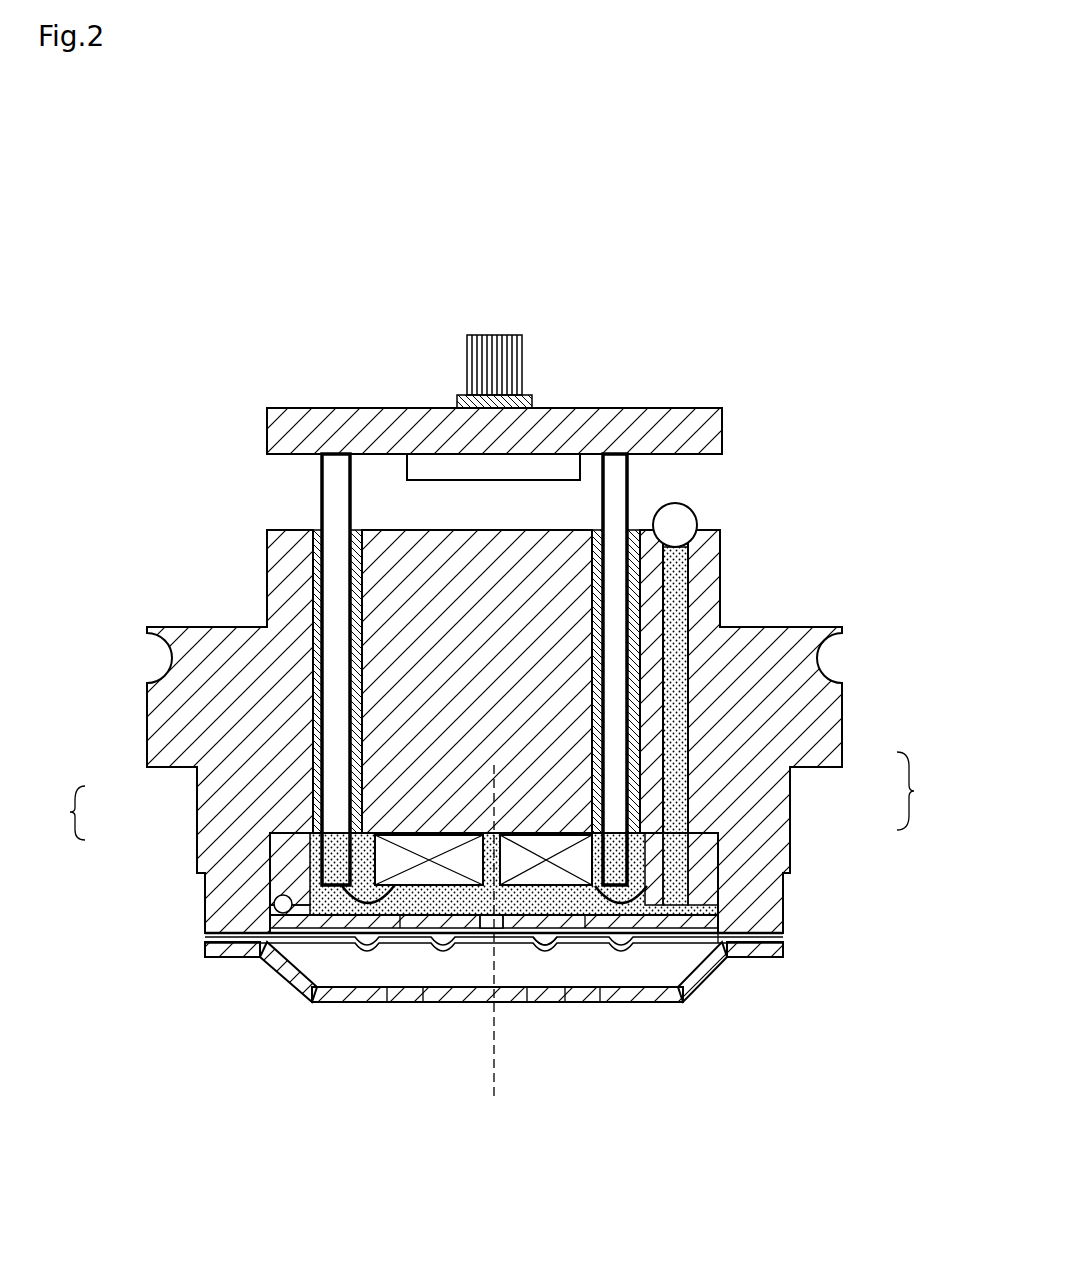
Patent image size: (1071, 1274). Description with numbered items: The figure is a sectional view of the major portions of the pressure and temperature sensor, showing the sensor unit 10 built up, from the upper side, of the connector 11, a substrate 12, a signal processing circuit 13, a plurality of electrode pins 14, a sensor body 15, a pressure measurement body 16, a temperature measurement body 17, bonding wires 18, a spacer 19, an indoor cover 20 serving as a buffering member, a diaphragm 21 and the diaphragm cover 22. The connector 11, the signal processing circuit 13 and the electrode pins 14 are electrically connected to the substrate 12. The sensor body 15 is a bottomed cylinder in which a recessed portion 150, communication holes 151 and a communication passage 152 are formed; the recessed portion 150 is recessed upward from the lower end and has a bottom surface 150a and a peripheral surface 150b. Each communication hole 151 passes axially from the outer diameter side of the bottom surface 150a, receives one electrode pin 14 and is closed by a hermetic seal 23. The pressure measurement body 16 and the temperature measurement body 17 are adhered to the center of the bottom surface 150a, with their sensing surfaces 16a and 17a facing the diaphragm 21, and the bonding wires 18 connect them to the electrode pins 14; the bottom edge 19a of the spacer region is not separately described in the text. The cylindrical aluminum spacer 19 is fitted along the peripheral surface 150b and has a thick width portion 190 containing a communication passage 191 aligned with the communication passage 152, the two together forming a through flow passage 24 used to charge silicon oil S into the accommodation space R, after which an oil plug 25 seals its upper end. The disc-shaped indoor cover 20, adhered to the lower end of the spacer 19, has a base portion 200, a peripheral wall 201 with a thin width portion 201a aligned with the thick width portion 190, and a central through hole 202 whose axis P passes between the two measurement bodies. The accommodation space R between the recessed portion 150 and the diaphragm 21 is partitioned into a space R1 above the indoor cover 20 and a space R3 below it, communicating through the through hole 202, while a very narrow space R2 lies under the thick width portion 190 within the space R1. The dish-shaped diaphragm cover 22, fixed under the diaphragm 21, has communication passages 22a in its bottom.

The sensor unit 10 is at (745, 322).
The connector 11 is at (465, 366).
The substrate 12 is at (627, 437).
The signal processing circuit 13 is at (572, 465).
The electrode pins 14 is at (332, 481).
The sensor body 15 is at (283, 557).
The recessed portion 150 is at (370, 859).
The bottom surface 150a is at (270, 834).
The peripheral surface 150b is at (302, 843).
The communication holes 151 is at (313, 695).
The communication passage 152 is at (677, 782).
The pressure measurement body 16 is at (436, 850).
The sensing surface 16a is at (437, 916).
The temperature measurement body 17 is at (541, 850).
The sensing surface 17a is at (565, 920).
The bonding wires 18 is at (343, 900).
The spacer 19 is at (690, 858).
The yoke bottom surface 19a is at (280, 916).
The thick width portion 190 is at (700, 918).
The communication passage 191 is at (690, 842).
The indoor cover 20 is at (752, 947).
The base portion 200 is at (330, 895).
The peripheral wall 201 is at (287, 896).
The thin width portion 201a is at (720, 940).
The through hole 202 is at (540, 947).
The diaphragm 21 is at (266, 957).
The diaphragm cover 22 is at (292, 990).
The communication passages 22a is at (400, 992).
The hermetic seal 23 is at (313, 648).
The through flow passage 24 is at (922, 791).
The oil plug 25 is at (682, 522).
The axis P is at (493, 947).
The silicon oil S is at (452, 960).
The accommodation space R is at (620, 950).
The space R1 is at (655, 965).
The space R2 is at (695, 962).
The space R3 is at (745, 965).